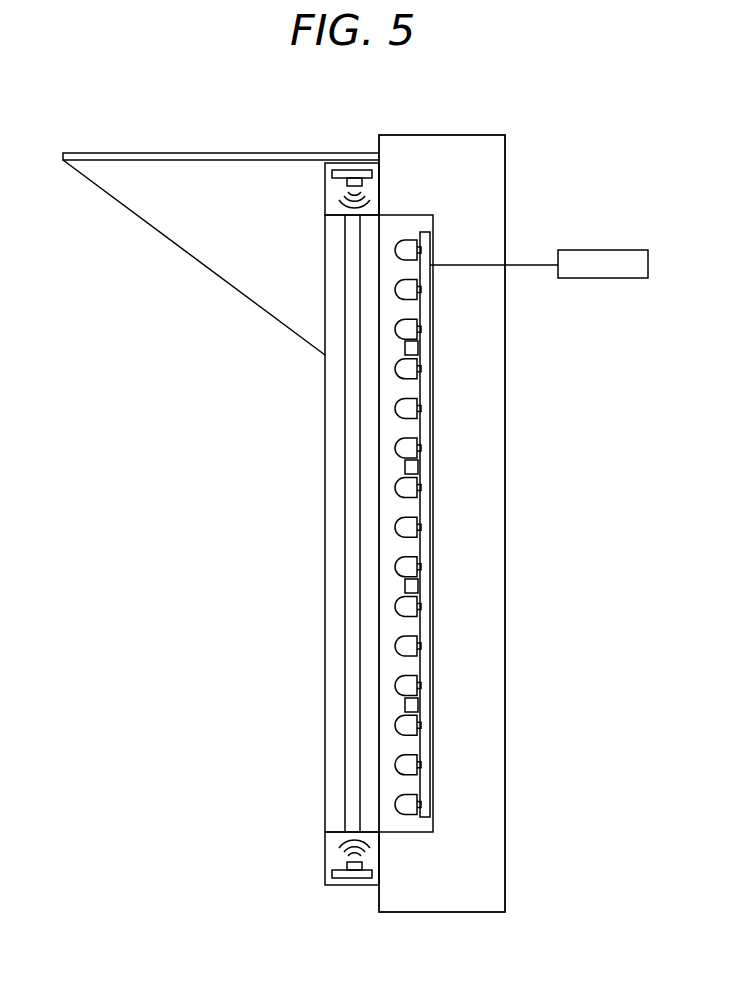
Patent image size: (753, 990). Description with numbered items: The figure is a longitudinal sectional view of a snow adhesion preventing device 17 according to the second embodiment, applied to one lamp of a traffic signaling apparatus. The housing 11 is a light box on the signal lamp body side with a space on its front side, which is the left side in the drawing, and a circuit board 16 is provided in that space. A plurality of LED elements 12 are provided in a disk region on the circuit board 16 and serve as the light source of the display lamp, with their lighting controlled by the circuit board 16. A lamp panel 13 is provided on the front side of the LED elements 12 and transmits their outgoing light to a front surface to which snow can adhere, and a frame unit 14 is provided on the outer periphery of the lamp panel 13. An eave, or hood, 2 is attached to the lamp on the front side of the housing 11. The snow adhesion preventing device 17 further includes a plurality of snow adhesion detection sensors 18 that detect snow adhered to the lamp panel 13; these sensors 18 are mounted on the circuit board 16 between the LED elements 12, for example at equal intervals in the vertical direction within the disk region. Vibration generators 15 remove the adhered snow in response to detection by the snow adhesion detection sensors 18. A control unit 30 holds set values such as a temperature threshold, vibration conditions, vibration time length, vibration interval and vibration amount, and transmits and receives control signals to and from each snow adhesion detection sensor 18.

The eave (hood) 2 is at (186, 152).
The housing 11 is at (493, 405).
The LED elements 12 is at (404, 249).
The lamp panel 13 is at (345, 240).
The frame unit 14 is at (326, 775).
The vibration generators 15 is at (332, 181).
The circuit board 16 is at (430, 237).
The snow adhesion preventing device 17 is at (246, 683).
The snow adhesion detection sensors 18 is at (418, 348).
The control unit 30 is at (592, 250).